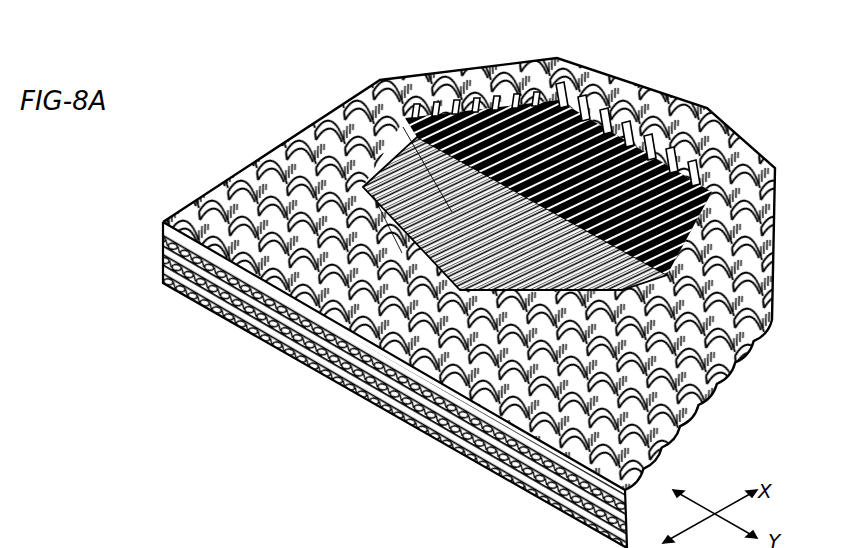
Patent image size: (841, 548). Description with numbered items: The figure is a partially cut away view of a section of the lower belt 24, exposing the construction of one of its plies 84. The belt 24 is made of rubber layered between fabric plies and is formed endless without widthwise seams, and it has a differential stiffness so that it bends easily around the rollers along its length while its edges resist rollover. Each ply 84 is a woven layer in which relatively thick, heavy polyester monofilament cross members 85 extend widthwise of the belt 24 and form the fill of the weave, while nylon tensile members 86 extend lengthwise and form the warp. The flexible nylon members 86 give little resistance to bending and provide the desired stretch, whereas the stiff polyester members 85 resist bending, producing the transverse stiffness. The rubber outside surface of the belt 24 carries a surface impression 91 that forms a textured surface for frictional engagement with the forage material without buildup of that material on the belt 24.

The lower belt 24 is at (316, 150).
The surface impression 91 is at (285, 177).
The ply 84 is at (162, 268).
The polyester monofilament cross members 85 is at (372, 112).
The nylon tensile members 86 is at (500, 72).